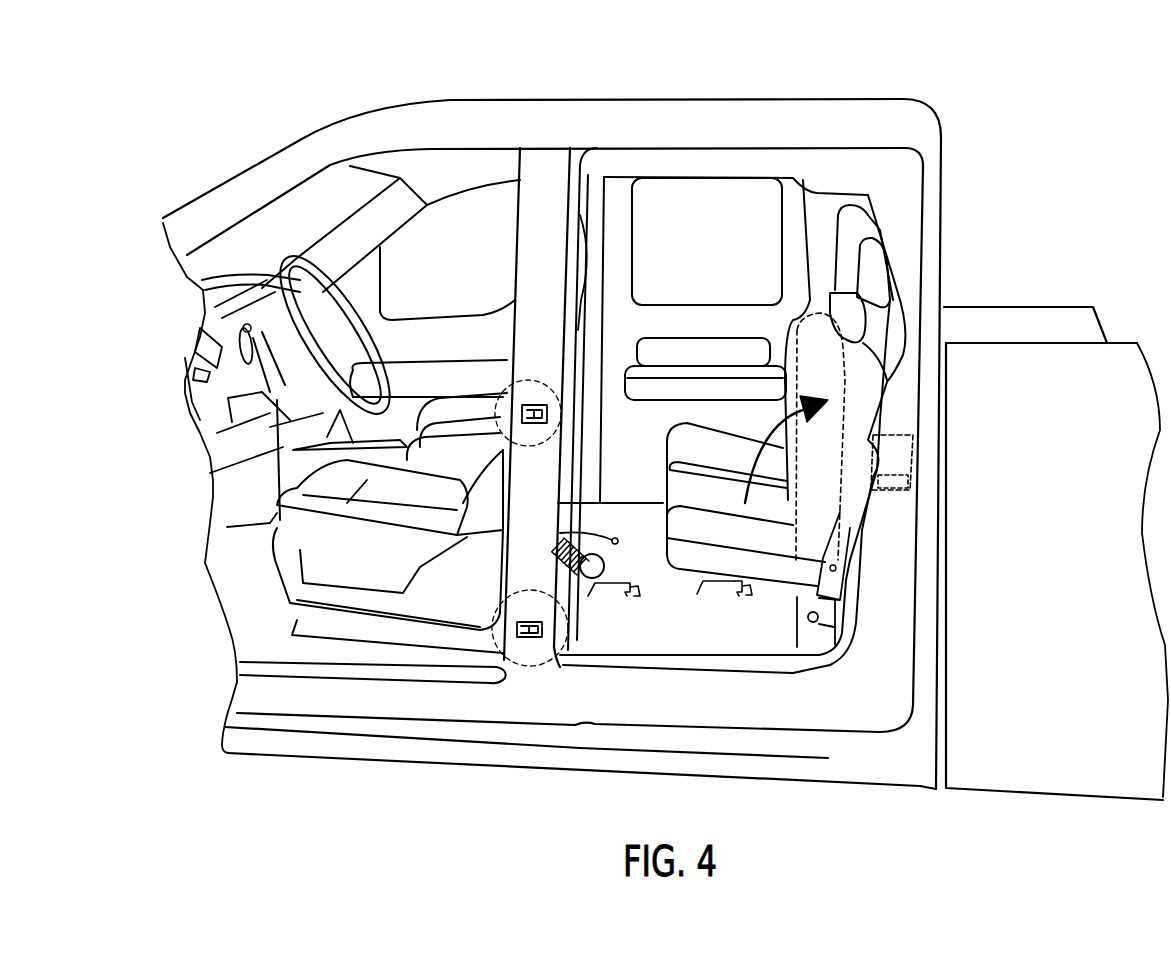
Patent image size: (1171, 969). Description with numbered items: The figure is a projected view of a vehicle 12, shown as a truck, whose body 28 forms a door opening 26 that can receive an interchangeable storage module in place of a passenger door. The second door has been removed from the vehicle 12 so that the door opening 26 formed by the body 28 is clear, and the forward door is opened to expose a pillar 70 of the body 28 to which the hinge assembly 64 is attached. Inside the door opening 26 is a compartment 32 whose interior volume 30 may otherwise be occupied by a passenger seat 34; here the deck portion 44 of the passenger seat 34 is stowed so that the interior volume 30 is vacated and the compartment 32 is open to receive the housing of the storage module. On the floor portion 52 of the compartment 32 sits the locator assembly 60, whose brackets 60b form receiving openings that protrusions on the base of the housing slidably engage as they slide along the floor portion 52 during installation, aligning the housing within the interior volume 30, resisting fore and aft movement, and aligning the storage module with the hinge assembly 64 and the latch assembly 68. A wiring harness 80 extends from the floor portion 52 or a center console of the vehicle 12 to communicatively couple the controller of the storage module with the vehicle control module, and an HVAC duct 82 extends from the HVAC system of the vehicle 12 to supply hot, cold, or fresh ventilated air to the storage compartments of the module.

The vehicle 12 is at (266, 110).
The door opening 26 is at (824, 357).
The body 28 is at (738, 123).
The interior volume 30 is at (824, 357).
The compartment 32 is at (893, 160).
The passenger seat 34 is at (840, 303).
The deck portion 44 is at (693, 487).
The floor portion 52 is at (684, 612).
The locator assembly 60 is at (695, 648).
The bracket 60b is at (615, 592).
The hinge assembly 64 is at (515, 400).
The latch assembly 68 is at (915, 445).
The pillar 70 is at (537, 237).
The wiring harness 80 is at (616, 536).
The HVAC duct 82 is at (605, 558).